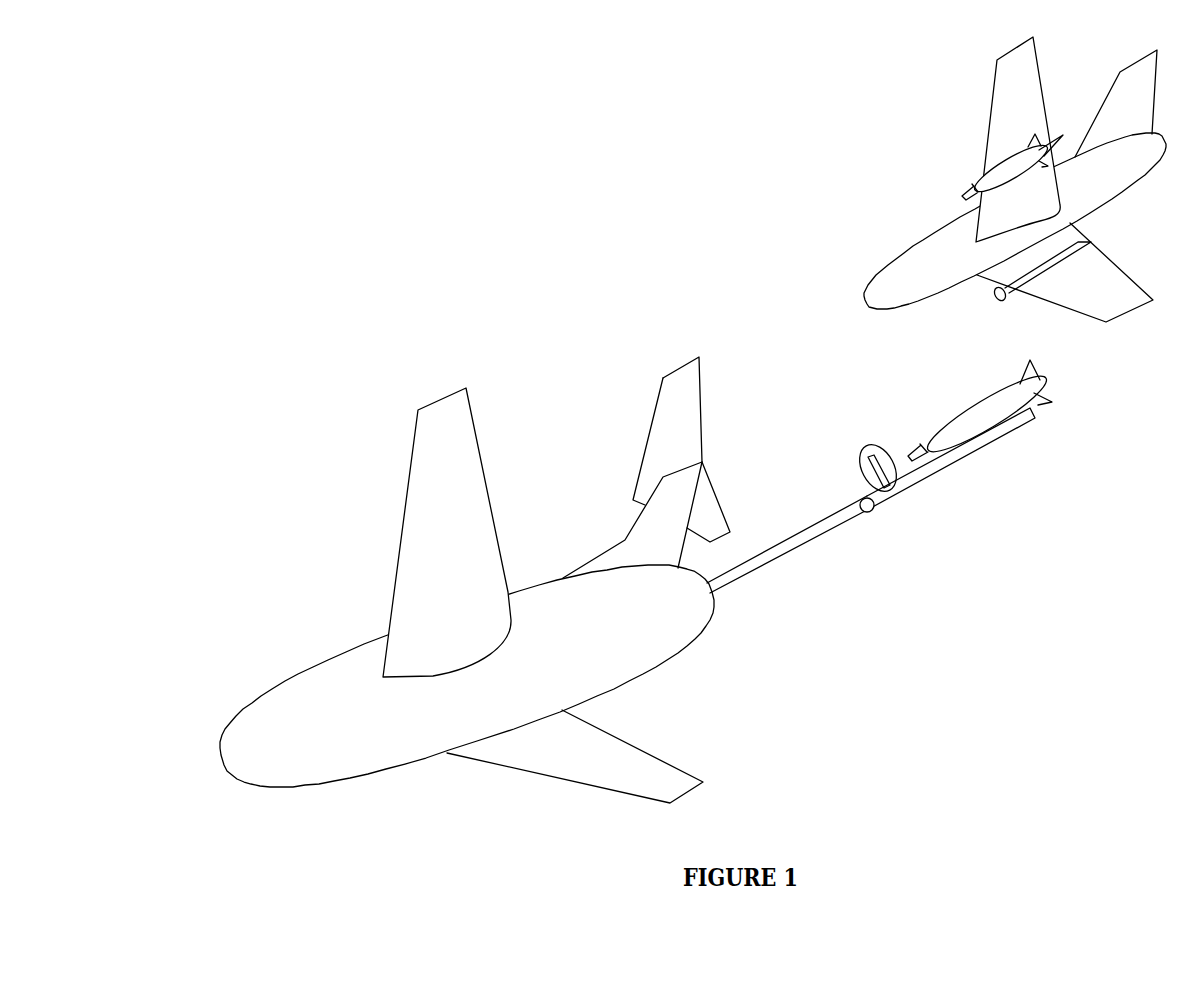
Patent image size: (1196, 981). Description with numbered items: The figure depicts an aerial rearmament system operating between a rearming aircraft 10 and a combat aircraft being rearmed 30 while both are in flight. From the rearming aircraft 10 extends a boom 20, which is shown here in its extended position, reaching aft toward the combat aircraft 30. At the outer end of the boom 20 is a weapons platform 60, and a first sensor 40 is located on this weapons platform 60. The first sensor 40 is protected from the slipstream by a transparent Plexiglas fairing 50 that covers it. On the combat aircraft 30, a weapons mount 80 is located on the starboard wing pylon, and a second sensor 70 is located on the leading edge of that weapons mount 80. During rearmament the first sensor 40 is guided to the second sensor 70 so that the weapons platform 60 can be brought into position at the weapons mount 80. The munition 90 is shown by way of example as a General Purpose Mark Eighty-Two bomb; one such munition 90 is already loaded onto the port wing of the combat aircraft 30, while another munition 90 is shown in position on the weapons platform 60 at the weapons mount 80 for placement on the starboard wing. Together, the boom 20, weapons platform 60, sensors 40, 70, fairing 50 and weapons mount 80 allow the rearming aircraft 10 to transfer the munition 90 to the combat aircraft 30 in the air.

The rearming aircraft 10 is at (263, 787).
The boom 20 is at (762, 568).
The combat aircraft being rearmed 30 is at (878, 270).
The first sensor 40 is at (868, 473).
The Plexiglas fairing 50 is at (860, 450).
The weapons platform 60 is at (925, 483).
The second sensor 70 is at (1007, 305).
The weapons mount 80 is at (1082, 252).
The munition 90 is at (948, 420).